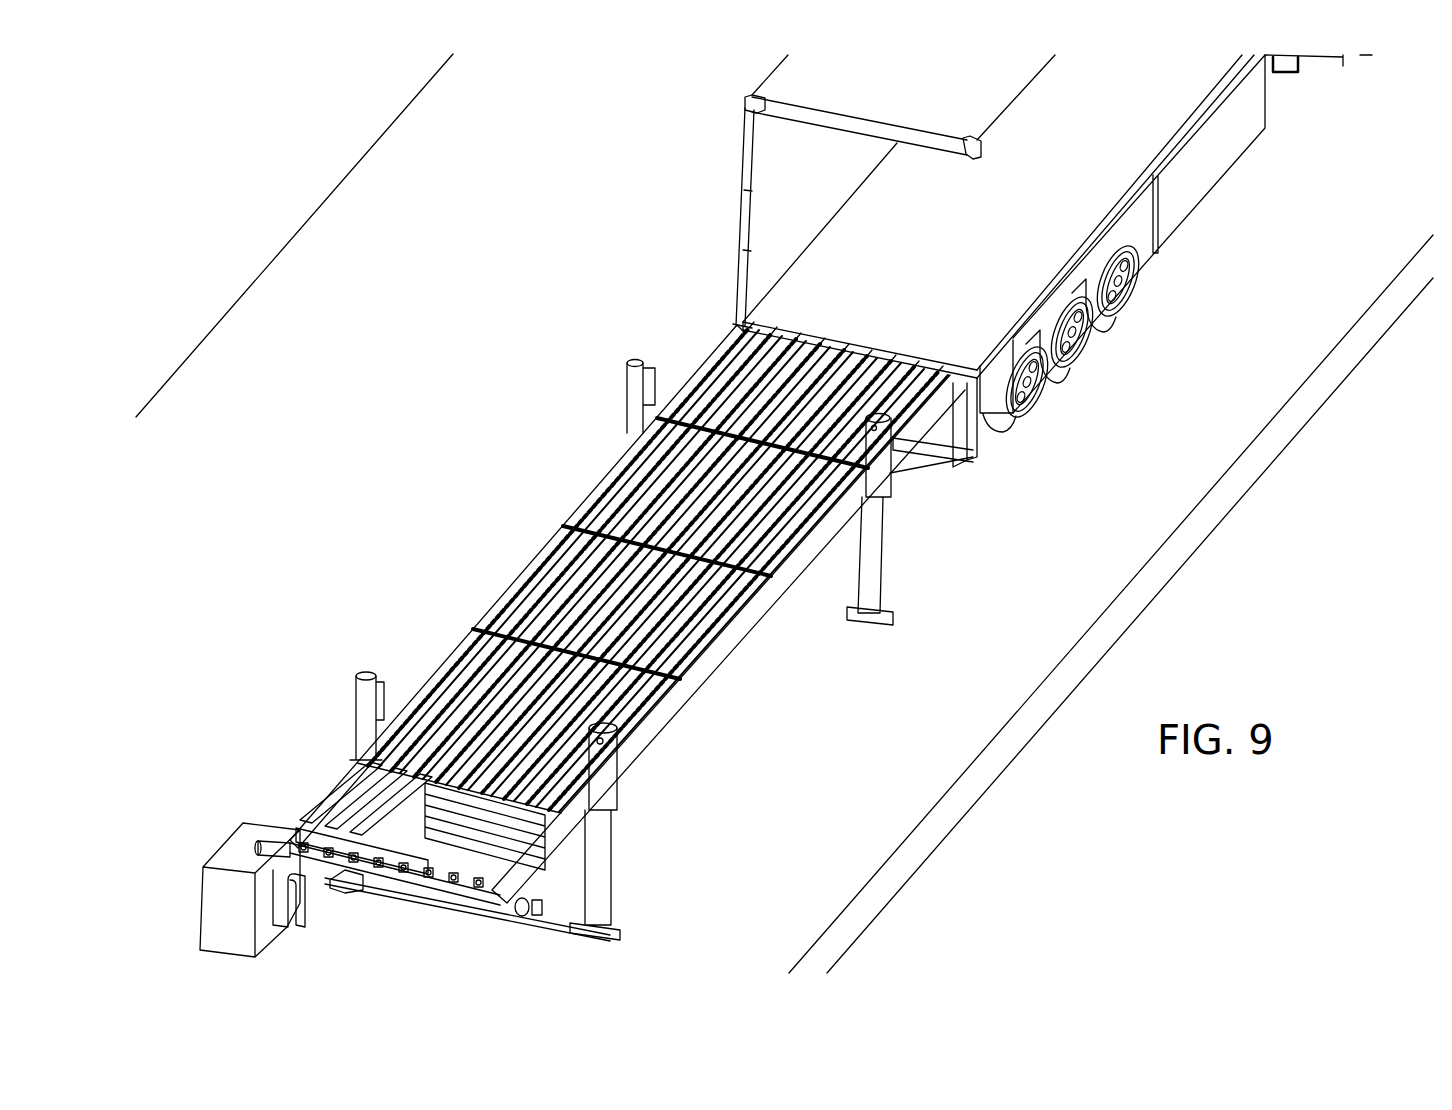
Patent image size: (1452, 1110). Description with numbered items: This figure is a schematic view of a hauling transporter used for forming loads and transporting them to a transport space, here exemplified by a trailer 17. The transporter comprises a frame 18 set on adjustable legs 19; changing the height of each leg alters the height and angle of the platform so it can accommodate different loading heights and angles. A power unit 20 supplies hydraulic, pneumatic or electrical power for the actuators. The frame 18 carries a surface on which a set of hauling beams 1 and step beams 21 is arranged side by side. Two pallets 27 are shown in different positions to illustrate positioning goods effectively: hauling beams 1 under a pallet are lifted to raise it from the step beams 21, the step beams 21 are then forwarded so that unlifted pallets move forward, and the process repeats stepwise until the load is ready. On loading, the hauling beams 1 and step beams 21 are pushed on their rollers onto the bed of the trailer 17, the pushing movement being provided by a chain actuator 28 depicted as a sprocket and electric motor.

The hauling beams 1 is at (618, 638).
The trailer 17 is at (1125, 158).
The frame 18 is at (697, 682).
The adjustable legs 19 is at (873, 540).
The power unit 20 is at (243, 823).
The step beams 21 is at (462, 645).
The pallets 27 is at (353, 782).
The chain actuator 28 is at (523, 912).